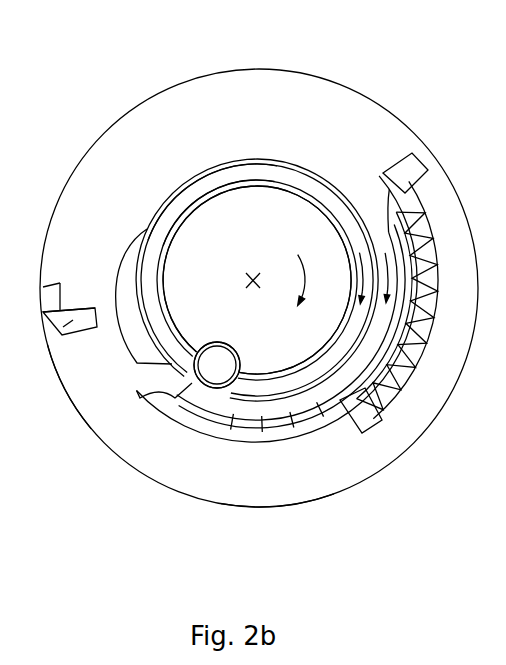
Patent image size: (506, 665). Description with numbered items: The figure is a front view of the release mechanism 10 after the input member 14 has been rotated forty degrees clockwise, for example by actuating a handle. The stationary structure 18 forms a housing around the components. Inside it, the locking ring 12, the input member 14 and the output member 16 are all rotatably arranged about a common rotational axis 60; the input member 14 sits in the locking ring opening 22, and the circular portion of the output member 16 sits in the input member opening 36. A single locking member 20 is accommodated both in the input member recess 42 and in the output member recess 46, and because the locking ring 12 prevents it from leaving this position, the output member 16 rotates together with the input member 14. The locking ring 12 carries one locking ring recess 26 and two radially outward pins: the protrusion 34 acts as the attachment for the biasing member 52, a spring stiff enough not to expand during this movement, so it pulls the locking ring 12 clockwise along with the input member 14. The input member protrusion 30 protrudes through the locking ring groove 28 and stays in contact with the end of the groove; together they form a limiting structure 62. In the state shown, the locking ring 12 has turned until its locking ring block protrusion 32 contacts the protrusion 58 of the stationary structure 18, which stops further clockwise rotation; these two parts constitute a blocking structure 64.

The release mechanism 10 is at (246, 288).
The stationary structure 18 is at (287, 67).
The locking ring 12 is at (270, 153).
The locking ring opening 22 is at (213, 170).
The input member opening 36 is at (167, 232).
The input member 14 is at (183, 203).
The output member 16 is at (274, 241).
The rotational axis 60 is at (249, 280).
The locking member 20 is at (215, 372).
The output member recess 46 is at (243, 357).
The locking ring recess 26 is at (138, 345).
The input member recess 42 is at (185, 372).
The locking ring groove 28 is at (288, 412).
The input member protrusion 30 is at (365, 415).
The protrusion 34 is at (408, 172).
The biasing member 52 is at (402, 368).
The protrusion 58 is at (50, 288).
The locking ring block protrusion 32 is at (58, 355).
The blocking structure 64 is at (41, 423).
The limiting structure 62 is at (338, 513).